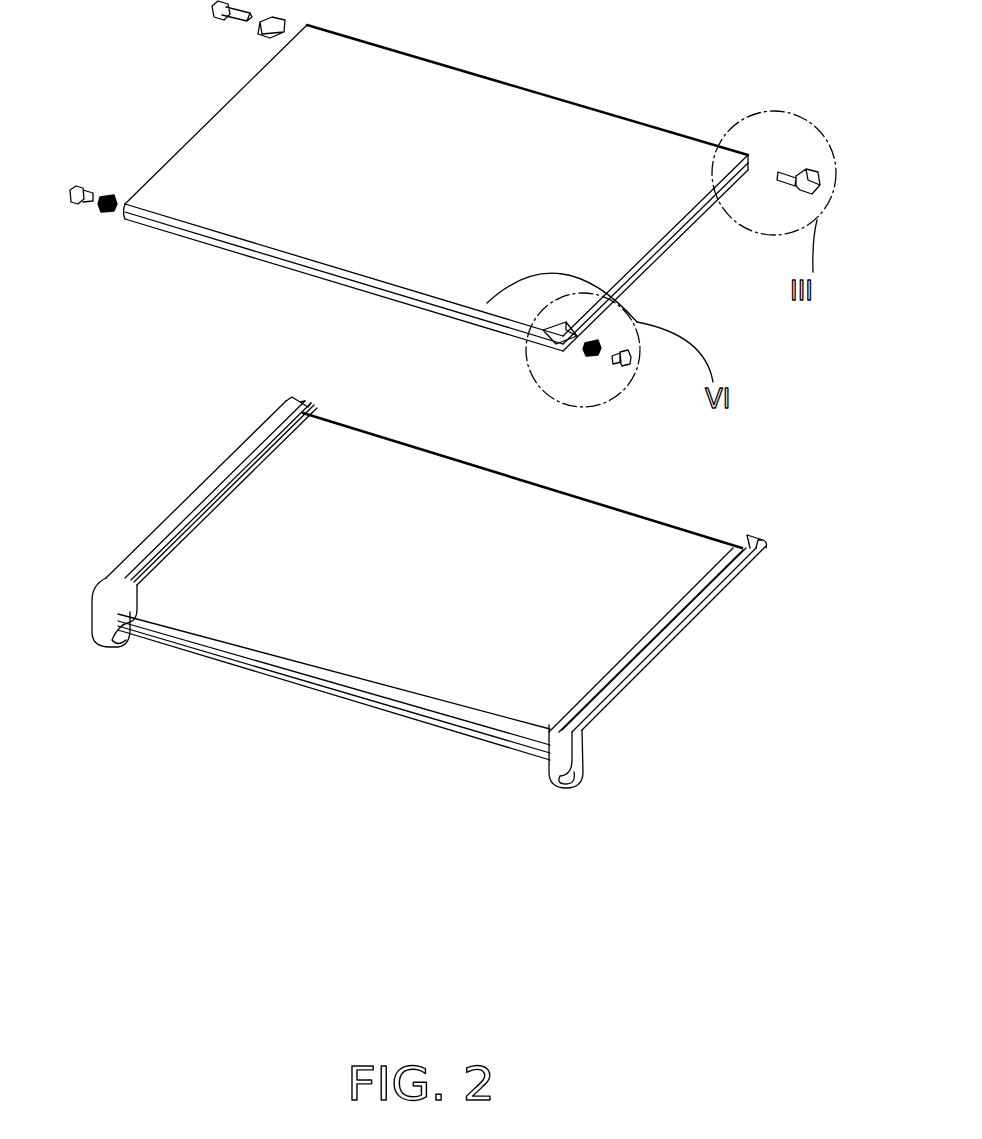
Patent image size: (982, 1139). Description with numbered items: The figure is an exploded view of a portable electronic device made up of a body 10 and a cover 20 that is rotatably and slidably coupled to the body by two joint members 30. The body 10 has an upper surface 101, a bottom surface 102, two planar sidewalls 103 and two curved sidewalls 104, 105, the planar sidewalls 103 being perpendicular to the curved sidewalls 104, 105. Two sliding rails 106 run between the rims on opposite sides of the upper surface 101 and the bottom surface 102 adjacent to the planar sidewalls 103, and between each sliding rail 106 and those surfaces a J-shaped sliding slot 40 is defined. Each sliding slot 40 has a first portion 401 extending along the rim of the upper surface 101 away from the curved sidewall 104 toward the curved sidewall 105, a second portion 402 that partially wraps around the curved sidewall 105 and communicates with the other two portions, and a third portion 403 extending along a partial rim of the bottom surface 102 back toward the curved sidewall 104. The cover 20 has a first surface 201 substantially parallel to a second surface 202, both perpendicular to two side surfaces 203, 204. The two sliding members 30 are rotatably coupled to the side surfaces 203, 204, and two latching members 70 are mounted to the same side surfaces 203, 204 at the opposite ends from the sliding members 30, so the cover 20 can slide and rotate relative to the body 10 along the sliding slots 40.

The body 10 is at (490, 638).
The upper surface 101 is at (482, 677).
The bottom surface 102 is at (320, 688).
The planar sidewall 103 is at (755, 592).
The curved sidewall 104 is at (593, 493).
The curved sidewall 105 is at (227, 657).
The sliding rail 106 is at (197, 500).
The cover 20 is at (425, 198).
The first surface 201 is at (300, 273).
The second surface 202 is at (257, 230).
The side surface 203 is at (665, 252).
The side surface 204 is at (215, 115).
The joint member 30 is at (807, 165).
The J-shaped sliding slot 40 is at (686, 690).
The first portion 401 is at (622, 688).
The second portion 402 is at (572, 735).
The third portion 403 is at (570, 777).
The latching member 70 is at (620, 362).